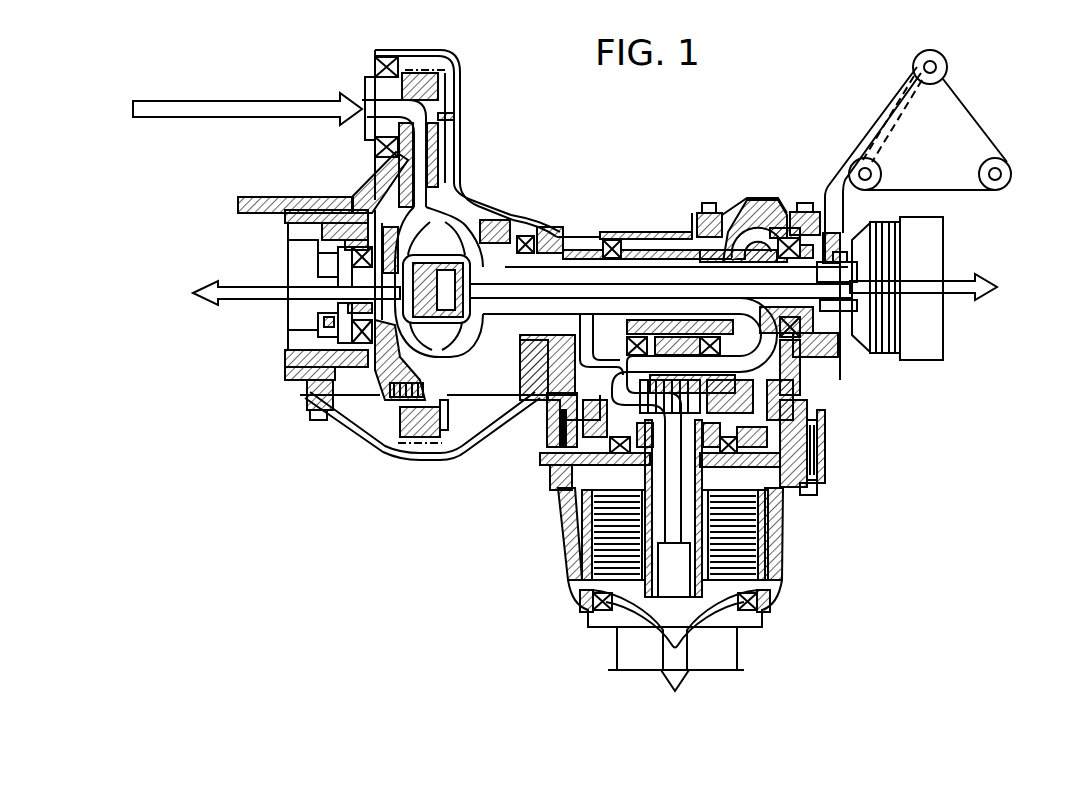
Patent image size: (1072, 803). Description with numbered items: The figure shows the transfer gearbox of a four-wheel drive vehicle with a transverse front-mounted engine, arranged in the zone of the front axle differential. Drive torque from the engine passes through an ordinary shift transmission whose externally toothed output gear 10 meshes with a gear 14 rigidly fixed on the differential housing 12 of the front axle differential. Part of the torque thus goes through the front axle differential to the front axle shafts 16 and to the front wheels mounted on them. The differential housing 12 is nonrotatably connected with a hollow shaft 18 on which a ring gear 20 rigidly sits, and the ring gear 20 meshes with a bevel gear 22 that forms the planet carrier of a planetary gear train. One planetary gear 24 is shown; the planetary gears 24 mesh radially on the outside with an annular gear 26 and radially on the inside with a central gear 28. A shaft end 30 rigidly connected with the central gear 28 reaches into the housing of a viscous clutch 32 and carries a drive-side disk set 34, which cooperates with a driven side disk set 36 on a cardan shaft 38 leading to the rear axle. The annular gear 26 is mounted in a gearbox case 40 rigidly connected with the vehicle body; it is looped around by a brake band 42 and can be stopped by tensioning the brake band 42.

The output gear 10 is at (441, 86).
The differential housing 12 is at (511, 224).
The gear 14 is at (426, 420).
The front axle shafts 16 is at (322, 307).
The hollow shaft 18 is at (643, 263).
The ring gear 20 is at (781, 205).
The bevel gear 22 is at (798, 384).
The planetary gear 24 is at (548, 430).
The annular gear 26 is at (818, 450).
The central gear 28 is at (808, 414).
The shaft end 30 is at (780, 480).
The viscous clutch 32 is at (558, 525).
The drive-side disk set 34 is at (600, 557).
The driven side disk set 36 is at (768, 570).
The cardan shaft 38 is at (722, 648).
The gearbox case 40 is at (793, 518).
The brake band 42 is at (550, 463).